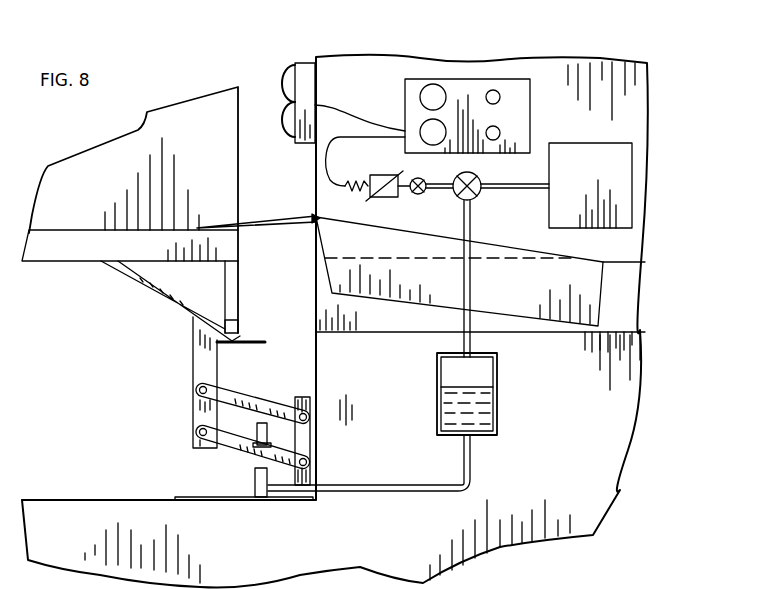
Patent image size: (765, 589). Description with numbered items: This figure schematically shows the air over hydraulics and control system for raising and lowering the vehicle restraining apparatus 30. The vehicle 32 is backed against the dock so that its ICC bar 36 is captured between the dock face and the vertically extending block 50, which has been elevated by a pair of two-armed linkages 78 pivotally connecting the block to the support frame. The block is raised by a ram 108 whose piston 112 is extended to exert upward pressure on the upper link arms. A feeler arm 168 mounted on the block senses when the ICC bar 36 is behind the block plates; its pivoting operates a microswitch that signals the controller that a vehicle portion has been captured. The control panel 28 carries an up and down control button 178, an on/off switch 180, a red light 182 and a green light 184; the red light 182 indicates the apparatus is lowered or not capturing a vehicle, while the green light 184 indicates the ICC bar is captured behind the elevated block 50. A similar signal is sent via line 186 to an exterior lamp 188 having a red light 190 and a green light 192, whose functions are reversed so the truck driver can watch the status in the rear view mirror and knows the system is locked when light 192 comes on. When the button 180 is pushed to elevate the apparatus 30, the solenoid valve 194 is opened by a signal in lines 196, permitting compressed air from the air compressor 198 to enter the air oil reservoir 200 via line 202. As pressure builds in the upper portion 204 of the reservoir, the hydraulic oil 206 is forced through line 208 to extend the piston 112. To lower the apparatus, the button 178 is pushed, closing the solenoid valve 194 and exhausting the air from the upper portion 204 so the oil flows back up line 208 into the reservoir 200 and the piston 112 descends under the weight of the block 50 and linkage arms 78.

The control panel 28 is at (514, 99).
The apparatus 30 is at (188, 466).
The vehicle 32 is at (90, 242).
The ICC bar 36 is at (240, 322).
The vertically extending block 50 is at (205, 355).
The two-armed linkage 78 is at (210, 405).
The ram 108 is at (259, 479).
The piston 112 is at (283, 442).
The feeler arm 168 is at (243, 347).
The up and down control button 178 is at (500, 133).
The on/off switch 180 is at (493, 90).
The red light 182 is at (426, 90).
The green light 184 is at (430, 137).
The line 186 is at (340, 106).
The exterior lamp 188 is at (305, 82).
The red light 190 is at (283, 85).
The green light 192 is at (289, 125).
The solenoid valve 194 is at (483, 202).
The lines 196 is at (447, 192).
The air compressor 198 is at (603, 190).
The air oil reservoir 200 is at (496, 385).
The line 202 is at (472, 291).
The upper portion of the reservoir 204 is at (450, 370).
The hydraulic oil 206 is at (478, 422).
The line 208 is at (383, 491).